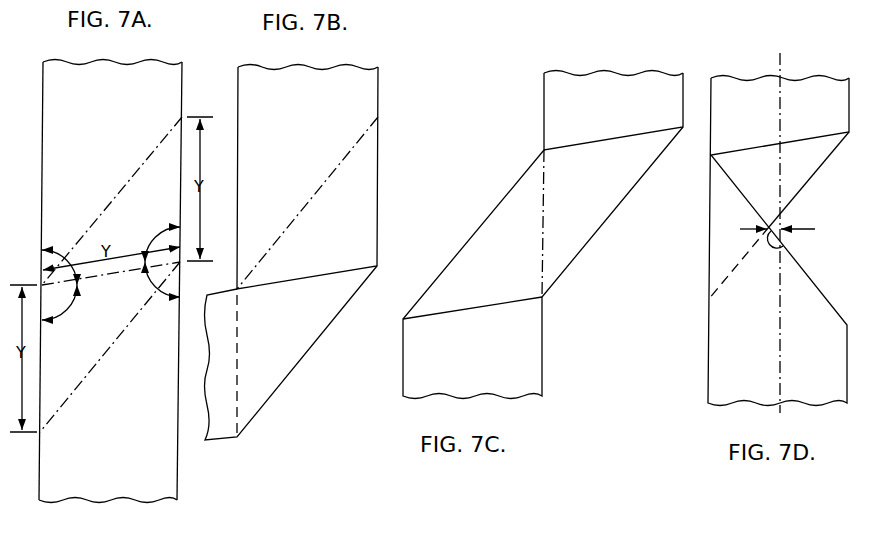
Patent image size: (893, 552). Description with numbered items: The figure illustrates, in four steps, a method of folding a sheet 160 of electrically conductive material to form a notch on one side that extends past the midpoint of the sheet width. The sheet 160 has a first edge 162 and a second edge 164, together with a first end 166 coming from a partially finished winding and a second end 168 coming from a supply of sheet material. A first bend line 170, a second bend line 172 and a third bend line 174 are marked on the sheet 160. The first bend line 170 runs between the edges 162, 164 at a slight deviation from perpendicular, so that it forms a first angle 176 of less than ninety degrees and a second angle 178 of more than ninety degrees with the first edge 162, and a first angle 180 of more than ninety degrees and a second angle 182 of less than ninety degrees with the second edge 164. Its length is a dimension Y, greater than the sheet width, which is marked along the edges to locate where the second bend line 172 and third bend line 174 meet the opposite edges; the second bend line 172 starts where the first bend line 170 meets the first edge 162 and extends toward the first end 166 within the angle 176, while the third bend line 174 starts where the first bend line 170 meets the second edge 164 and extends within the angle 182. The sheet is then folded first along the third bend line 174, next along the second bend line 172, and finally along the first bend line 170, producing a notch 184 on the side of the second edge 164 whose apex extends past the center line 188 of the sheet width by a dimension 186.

In FIG. 7A, the sheet 160 is at (121, 293).
In FIG. 7B, the sheet 160 is at (315, 237).
In FIG. 7C, the sheet 160 is at (543, 221).
In FIG. 7D, the sheet 160 is at (768, 229).
In FIG. 7A, the first edge 162 is at (43, 212).
In FIG. 7A, the second edge 164 is at (178, 482).
In FIG. 7A, the first end 166 is at (62, 62).
In FIG. 7B, the first end 166 is at (252, 67).
In FIG. 7C, the first end 166 is at (551, 73).
In FIG. 7D, the first end 166 is at (833, 78).
In FIG. 7A, the second end 168 is at (75, 500).
In FIG. 7A, the first bend line 170 is at (108, 274).
In FIG. 7C, the first bend line 170 is at (547, 205).
In FIG. 7A, the second bend line 172 is at (118, 193).
In FIG. 7B, the second bend line 172 is at (330, 184).
In FIG. 7A, the third bend line 174 is at (103, 363).
In FIG. 7A, the first angle 176 is at (58, 254).
In FIG. 7A, the second angle 178 is at (69, 307).
In FIG. 7A, the first angle 180 is at (174, 228).
In FIG. 7A, the second angle 182 is at (170, 295).
In FIG. 7D, the notch 184 is at (795, 217).
In FIG. 7D, the dimension 186 is at (787, 247).
In FIG. 7D, the center line 188 is at (780, 325).